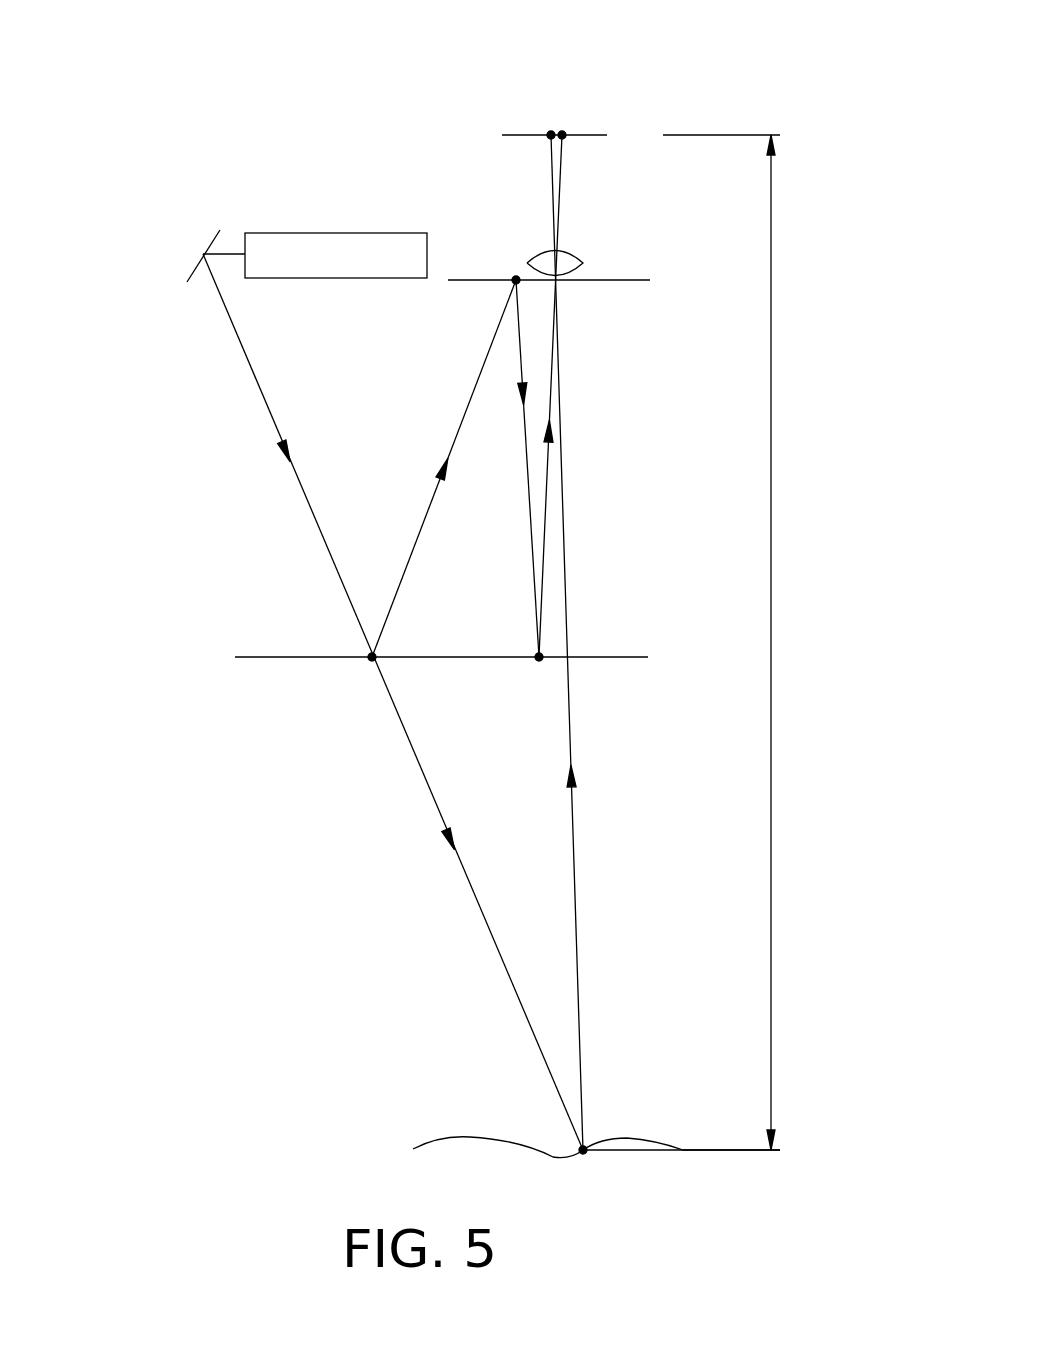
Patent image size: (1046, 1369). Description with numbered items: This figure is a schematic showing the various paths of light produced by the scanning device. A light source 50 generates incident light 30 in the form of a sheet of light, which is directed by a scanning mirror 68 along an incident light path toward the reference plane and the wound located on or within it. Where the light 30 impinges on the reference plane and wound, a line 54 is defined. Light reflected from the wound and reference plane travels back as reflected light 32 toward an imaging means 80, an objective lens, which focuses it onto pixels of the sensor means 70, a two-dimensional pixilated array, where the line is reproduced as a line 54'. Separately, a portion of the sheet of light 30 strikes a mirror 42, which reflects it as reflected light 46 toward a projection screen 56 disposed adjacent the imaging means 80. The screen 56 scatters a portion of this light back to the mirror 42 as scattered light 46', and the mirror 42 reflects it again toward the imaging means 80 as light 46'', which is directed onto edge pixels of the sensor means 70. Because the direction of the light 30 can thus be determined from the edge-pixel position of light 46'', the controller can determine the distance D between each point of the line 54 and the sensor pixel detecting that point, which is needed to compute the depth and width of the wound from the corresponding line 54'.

The incident light 30 is at (260, 392).
The reflected light 32 is at (573, 813).
The mirror 42 is at (609, 657).
The reflected light 46 is at (444, 468).
The scattered light 46' is at (500, 468).
The reflected scattered light 46'' is at (597, 331).
The light source 50 is at (363, 233).
The line 54 is at (617, 1181).
The line 54' is at (510, 96).
The projection screen 56 is at (612, 283).
The scanning mirror 68 is at (190, 268).
The sensor means 70 is at (593, 135).
The imaging means 80 is at (572, 252).
The distance D is at (773, 642).